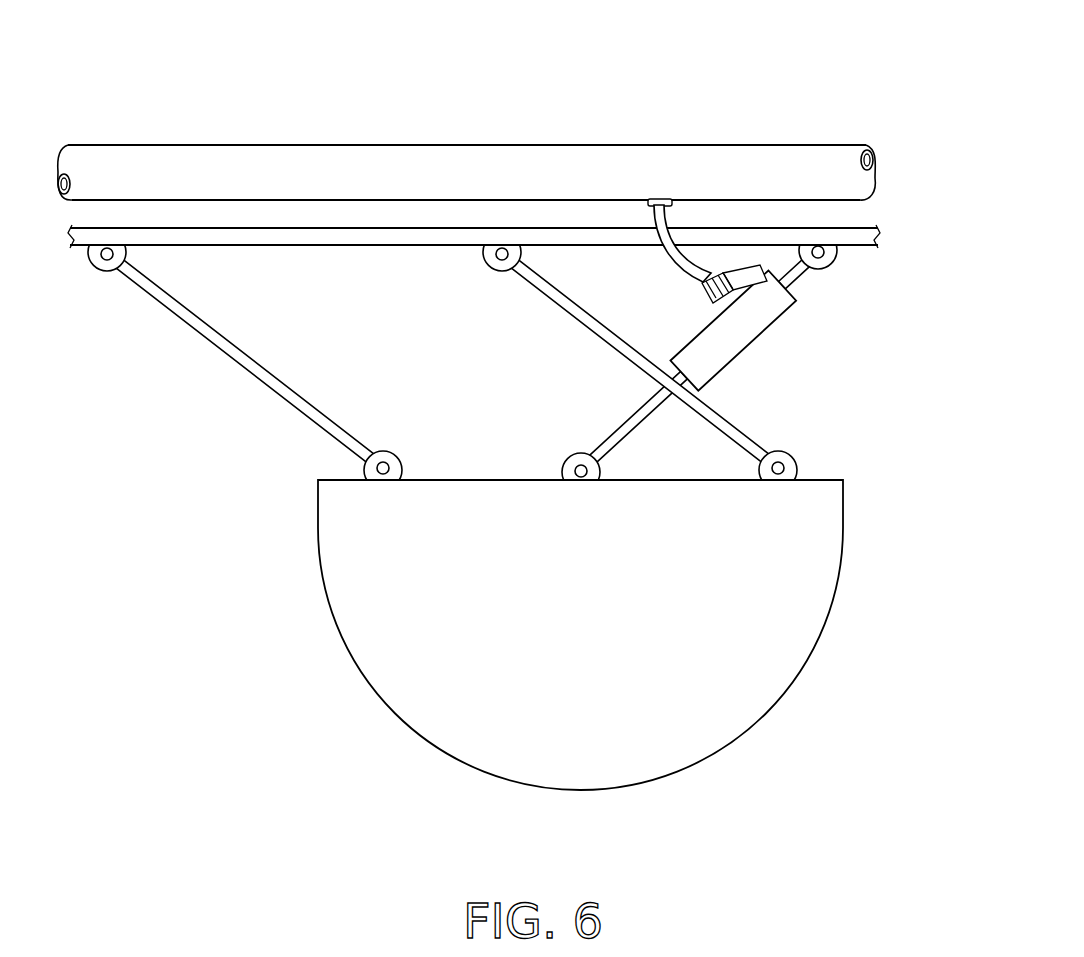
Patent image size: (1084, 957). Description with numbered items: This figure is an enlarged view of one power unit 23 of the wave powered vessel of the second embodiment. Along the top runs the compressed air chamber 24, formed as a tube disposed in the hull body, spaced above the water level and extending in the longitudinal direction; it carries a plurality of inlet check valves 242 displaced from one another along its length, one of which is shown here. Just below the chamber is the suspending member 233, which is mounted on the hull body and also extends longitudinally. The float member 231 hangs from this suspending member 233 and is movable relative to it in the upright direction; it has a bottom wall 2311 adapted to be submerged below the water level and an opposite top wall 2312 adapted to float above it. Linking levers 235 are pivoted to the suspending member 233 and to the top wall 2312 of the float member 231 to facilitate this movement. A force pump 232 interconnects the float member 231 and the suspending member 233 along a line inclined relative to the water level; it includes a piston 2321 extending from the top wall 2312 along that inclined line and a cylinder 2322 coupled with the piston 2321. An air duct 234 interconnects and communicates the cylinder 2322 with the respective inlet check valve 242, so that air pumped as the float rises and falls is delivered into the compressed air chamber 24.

The power unit 23 is at (497, 409).
The compressed air chamber 24 is at (556, 145).
The inlet check valve 242 is at (661, 199).
The air duct 234 is at (673, 237).
The suspending member 233 is at (179, 226).
The linking lever 235 is at (250, 410).
The force pump 232 is at (706, 360).
The piston 2321 is at (617, 432).
The cylinder 2322 is at (786, 306).
The float member 231 is at (625, 622).
The top wall 2312 is at (820, 480).
The bottom wall 2311 is at (740, 742).